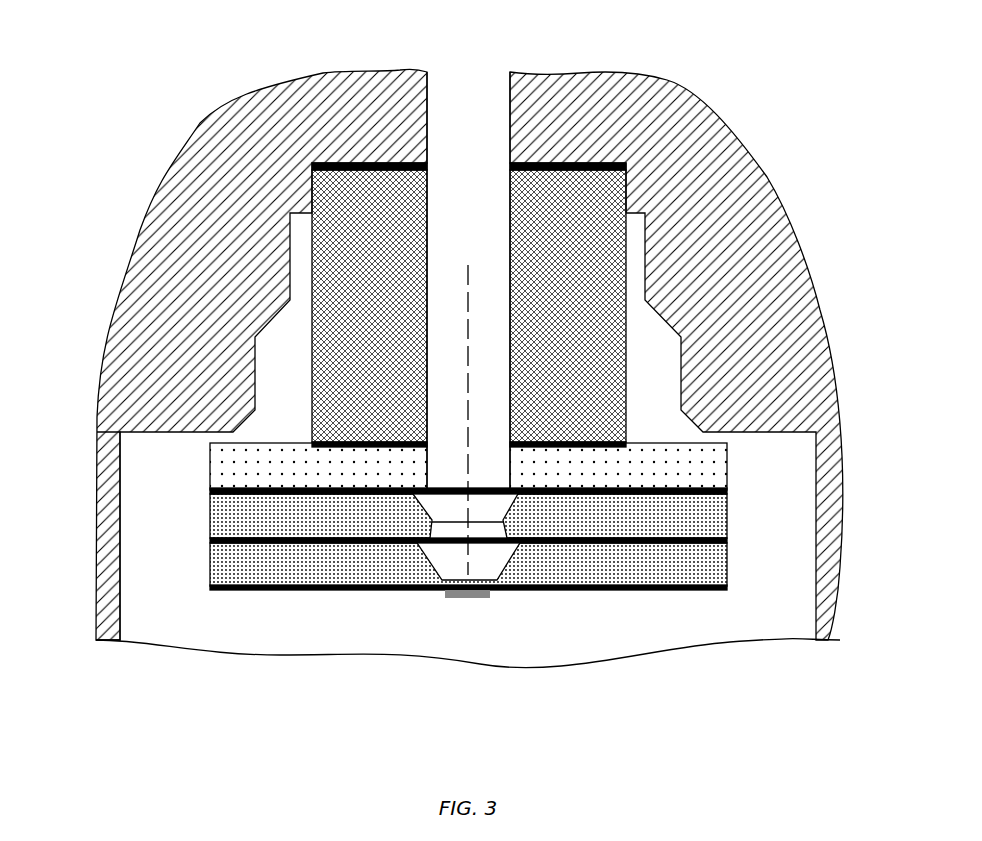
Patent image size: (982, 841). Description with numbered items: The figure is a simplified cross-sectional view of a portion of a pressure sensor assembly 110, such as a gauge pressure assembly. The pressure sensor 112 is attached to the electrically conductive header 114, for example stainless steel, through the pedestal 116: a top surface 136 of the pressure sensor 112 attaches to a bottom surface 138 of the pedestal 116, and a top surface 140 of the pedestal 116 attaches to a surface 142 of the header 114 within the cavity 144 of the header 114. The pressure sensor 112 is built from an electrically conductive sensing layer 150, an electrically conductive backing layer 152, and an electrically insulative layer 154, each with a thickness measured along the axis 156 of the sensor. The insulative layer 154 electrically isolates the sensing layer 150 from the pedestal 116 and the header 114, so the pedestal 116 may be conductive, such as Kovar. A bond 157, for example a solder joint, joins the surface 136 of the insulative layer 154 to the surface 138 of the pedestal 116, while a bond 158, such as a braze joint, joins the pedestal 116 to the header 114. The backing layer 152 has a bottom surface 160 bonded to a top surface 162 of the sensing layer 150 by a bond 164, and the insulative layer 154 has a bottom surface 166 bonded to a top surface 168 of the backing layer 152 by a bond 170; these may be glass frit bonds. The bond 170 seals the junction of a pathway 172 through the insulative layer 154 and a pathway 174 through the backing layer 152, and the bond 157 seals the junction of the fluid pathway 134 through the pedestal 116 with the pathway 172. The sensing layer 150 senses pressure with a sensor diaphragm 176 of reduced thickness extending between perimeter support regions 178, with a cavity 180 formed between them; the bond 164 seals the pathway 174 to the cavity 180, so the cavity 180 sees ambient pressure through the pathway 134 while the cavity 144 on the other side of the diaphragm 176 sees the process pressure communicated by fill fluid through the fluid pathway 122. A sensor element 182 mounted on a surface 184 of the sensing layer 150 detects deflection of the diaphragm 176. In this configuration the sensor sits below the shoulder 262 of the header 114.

The pressure sensor assembly 110 is at (105, 728).
The pressure sensor 112 is at (745, 600).
The header 114 is at (766, 228).
The pedestal 116 is at (598, 272).
The fluid pathway 122 is at (440, 243).
The fluid pathway 134 is at (468, 102).
The top surface 136 is at (230, 428).
The bottom surface 138 is at (368, 455).
The top surface 140 is at (336, 155).
The surface 142 is at (320, 183).
The cavity 144 is at (138, 563).
The sensing layer 150 is at (717, 563).
The backing layer 152 is at (710, 517).
The electrically insulative layer 154 is at (710, 473).
The axis 156 is at (513, 362).
The bond 157 is at (337, 443).
The bond 158 is at (375, 163).
The bottom surface 160 is at (275, 548).
The top surface 162 is at (235, 532).
The bond 164 is at (333, 543).
The bottom surface 166 is at (262, 503).
The top surface 168 is at (228, 483).
The bond 170 is at (310, 497).
The pathway 172 is at (493, 465).
The pathway 174 is at (497, 507).
The sensor diaphragm 176 is at (442, 580).
The perimeter support regions 178 is at (417, 577).
The cavity 180 is at (525, 562).
The sensor element 182 is at (488, 598).
The surface 184 is at (212, 597).
The shoulder 262 is at (788, 440).